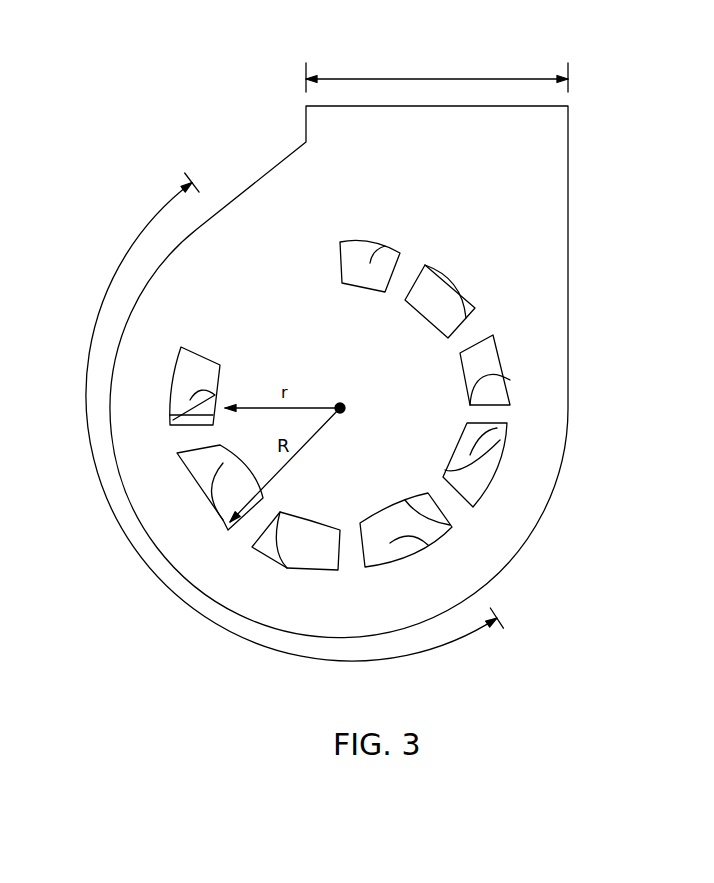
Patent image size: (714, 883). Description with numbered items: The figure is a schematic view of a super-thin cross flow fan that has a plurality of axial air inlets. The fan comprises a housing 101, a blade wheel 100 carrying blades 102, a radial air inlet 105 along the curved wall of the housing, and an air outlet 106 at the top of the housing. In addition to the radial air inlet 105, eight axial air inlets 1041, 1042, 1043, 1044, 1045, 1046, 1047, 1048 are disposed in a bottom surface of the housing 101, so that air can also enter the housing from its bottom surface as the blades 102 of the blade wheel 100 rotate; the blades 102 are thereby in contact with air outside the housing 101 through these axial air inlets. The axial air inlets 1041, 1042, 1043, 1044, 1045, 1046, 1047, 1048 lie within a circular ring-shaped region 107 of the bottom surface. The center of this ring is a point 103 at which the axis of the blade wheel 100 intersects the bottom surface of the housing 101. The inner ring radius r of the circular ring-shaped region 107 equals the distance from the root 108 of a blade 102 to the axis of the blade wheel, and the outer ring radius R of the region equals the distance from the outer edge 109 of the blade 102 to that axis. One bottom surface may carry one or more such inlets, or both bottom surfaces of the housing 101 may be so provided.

The blade wheel 100 is at (167, 408).
The housing 101 is at (555, 268).
The blade 102 is at (218, 375).
The point 103 is at (343, 403).
The axial air inlet 1041 is at (370, 263).
The axial air inlet 1042 is at (433, 295).
The axial air inlet 1043 is at (470, 373).
The axial air inlet 1044 is at (470, 455).
The axial air inlet 1045 is at (390, 543).
The axial air inlet 1046 is at (307, 555).
The axial air inlet 1047 is at (200, 478).
The axial air inlet 1048 is at (192, 368).
The radial air inlet 105 is at (137, 552).
The air outlet 106 is at (405, 78).
The circular ring-shaped region 107 is at (195, 498).
The root 108 is at (180, 418).
The outer edge 109 is at (224, 519).